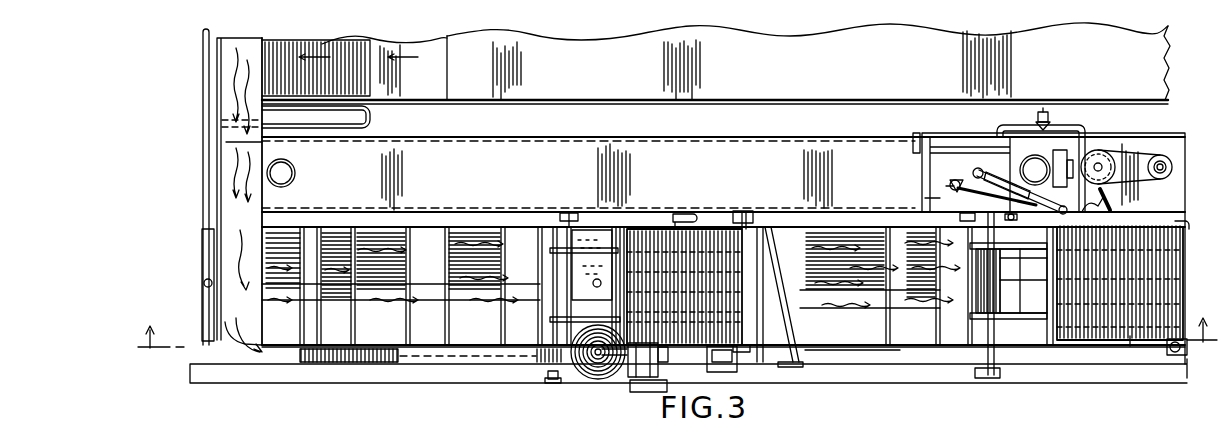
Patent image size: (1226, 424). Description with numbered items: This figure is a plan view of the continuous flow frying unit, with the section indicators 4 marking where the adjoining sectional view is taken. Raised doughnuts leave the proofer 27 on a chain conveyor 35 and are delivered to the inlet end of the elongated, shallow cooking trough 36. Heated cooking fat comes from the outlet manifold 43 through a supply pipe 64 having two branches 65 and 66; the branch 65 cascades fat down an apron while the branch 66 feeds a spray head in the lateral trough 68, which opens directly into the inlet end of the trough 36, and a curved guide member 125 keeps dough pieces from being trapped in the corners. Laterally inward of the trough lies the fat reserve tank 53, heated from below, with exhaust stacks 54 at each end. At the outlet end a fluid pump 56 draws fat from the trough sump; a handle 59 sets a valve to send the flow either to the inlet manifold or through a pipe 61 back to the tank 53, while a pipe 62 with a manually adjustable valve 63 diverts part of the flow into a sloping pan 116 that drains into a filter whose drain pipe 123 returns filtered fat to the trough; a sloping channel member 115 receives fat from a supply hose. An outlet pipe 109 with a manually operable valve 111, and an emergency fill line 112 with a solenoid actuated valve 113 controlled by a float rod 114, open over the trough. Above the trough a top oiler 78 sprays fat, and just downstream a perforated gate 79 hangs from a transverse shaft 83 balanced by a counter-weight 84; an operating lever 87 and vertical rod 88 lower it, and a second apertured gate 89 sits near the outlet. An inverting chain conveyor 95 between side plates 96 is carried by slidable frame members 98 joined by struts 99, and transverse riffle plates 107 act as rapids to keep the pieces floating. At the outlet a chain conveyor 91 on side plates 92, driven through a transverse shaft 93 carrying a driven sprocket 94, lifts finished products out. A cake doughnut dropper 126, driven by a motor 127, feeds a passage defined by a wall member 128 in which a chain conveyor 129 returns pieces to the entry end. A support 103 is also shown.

The section line 4- 4 is at (668, 348).
The proofer 27 is at (540, 53).
The chain conveyor 35 is at (352, 48).
The cooking trough 36 is at (245, 300).
The outlet manifold 43 is at (205, 257).
The fat reserve tank 53 is at (539, 152).
The exhaust stacks 54 is at (295, 169).
The fluid pump 56 is at (1098, 167).
The handle 59 is at (1128, 198).
The pipe 61 is at (988, 172).
The pipe 62 is at (960, 176).
The manually adjustable valve 63 is at (930, 182).
The supply pipe 64 is at (215, 175).
The branch supply pipe 65 is at (365, 127).
The branch supply pipe 66 is at (203, 70).
The lateral trough 68 is at (232, 132).
The top oiler 78 is at (597, 279).
The gate 79 is at (624, 262).
The transverse shaft 83 is at (555, 212).
The counter-weight 84 is at (555, 252).
The operating lever 87 is at (548, 374).
The rod 88 is at (552, 381).
The apertured gate 89 is at (1048, 270).
The chain conveyor 91 is at (1165, 288).
The side plates 92 is at (1133, 336).
The transverse shaft 93 is at (770, 376).
The driven sprocket 94 is at (1186, 225).
The chain conveyor 95 is at (712, 245).
The side plates 96 is at (730, 212).
The frame members 98 is at (755, 211).
The struts 99 is at (775, 270).
The base rail 103 is at (845, 357).
The riffle plates 107 is at (413, 300).
The outlet pipe 109 is at (1112, 215).
The manually operable valve 111 is at (975, 222).
The emergency fill line 112 is at (1065, 155).
The solenoid actuated valve 113 is at (1050, 122).
The rod 114 is at (1071, 162).
The channel member 115 is at (916, 144).
The pan 116 is at (905, 198).
The drain pipe 123 is at (680, 211).
The curved guide member 125 is at (237, 347).
The cake doughnut dropper 126 is at (590, 378).
The motor 127 is at (632, 383).
The wall member 128 is at (483, 349).
The chain conveyor 129 is at (372, 360).